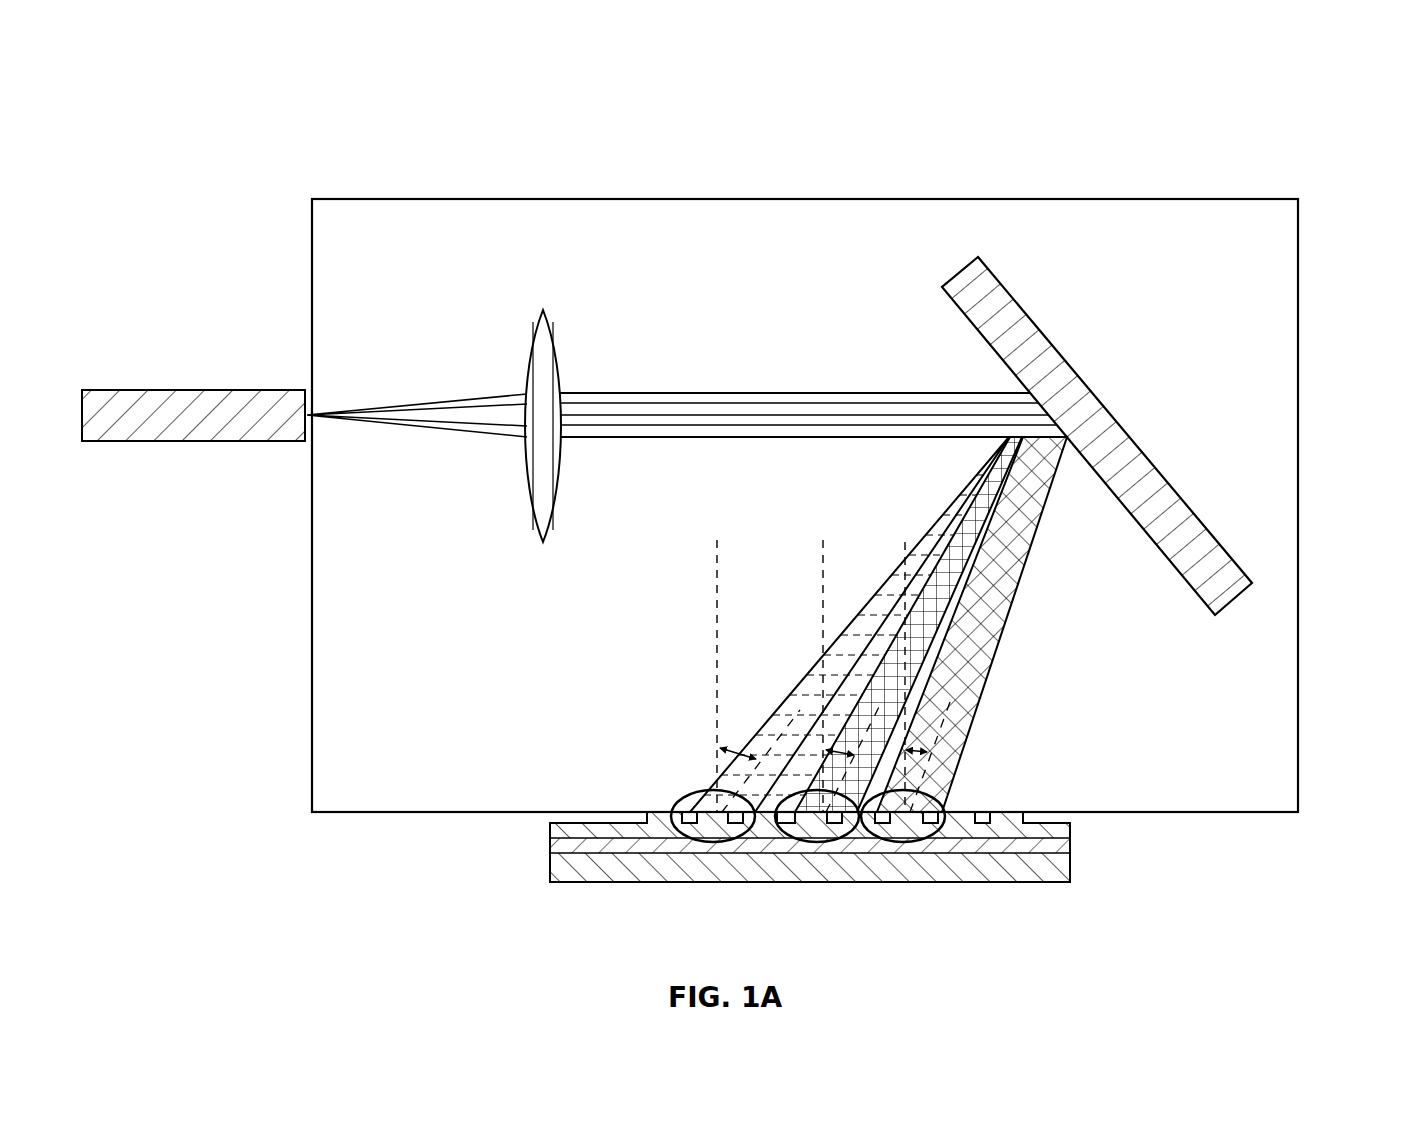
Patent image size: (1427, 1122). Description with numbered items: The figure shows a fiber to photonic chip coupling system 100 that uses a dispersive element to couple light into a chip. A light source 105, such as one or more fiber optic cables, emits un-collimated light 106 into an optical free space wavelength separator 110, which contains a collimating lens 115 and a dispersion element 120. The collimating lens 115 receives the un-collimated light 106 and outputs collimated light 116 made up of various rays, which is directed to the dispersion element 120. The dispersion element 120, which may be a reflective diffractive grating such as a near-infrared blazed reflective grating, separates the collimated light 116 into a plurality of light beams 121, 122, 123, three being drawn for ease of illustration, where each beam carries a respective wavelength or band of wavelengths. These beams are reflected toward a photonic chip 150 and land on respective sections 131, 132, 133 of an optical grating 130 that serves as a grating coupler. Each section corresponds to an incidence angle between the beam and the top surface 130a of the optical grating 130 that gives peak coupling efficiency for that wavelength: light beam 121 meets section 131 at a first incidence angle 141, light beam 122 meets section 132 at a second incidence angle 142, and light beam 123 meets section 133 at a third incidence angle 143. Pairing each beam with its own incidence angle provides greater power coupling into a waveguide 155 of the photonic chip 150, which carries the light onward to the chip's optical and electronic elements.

The system 100 is at (1340, 130).
The optical free space wavelength separator 110 is at (1250, 199).
The light source 105 is at (117, 390).
The un-collimated light 106 is at (447, 395).
The collimating lens 115 is at (541, 311).
The collimated light 116 is at (805, 392).
The dispersion element 120 is at (1050, 342).
The light beam 121 is at (803, 686).
The light beam 122 is at (972, 507).
The light beam 123 is at (1037, 533).
The first incidence angle 141 is at (717, 627).
The second incidence angle 142 is at (823, 627).
The third incidence angle 143 is at (904, 548).
The optical grating 130 is at (690, 790).
The top surface 130a is at (673, 812).
The section 131 is at (710, 843).
The section 132 is at (813, 843).
The section 133 is at (900, 843).
The photonic chip 150 is at (1037, 882).
The waveguide 155 is at (1072, 830).